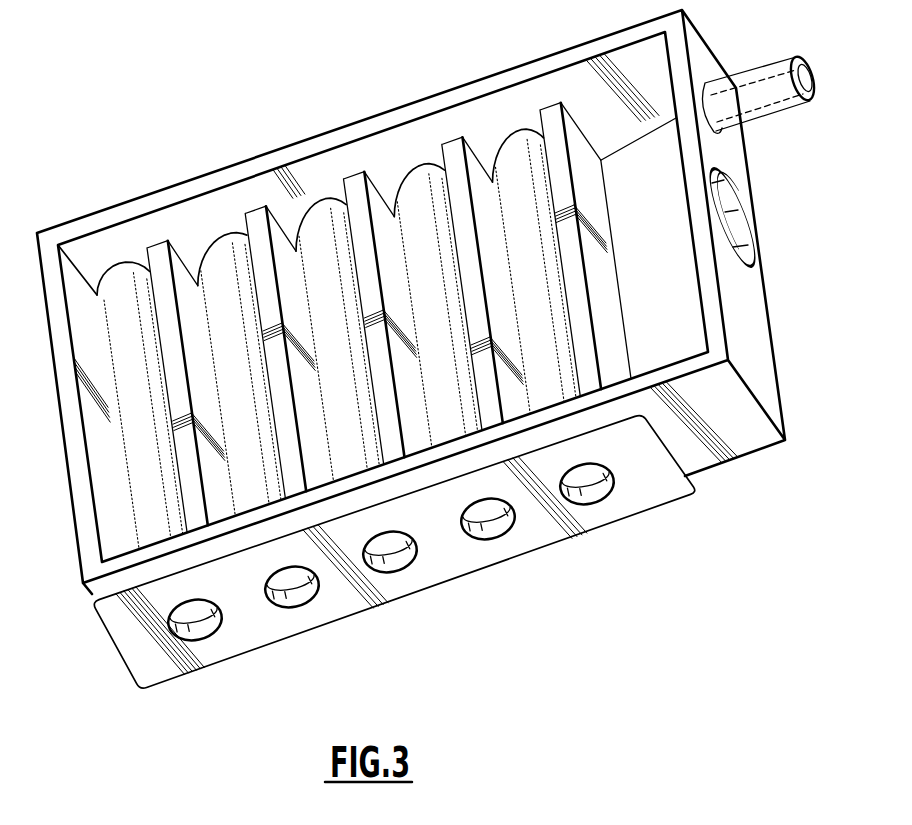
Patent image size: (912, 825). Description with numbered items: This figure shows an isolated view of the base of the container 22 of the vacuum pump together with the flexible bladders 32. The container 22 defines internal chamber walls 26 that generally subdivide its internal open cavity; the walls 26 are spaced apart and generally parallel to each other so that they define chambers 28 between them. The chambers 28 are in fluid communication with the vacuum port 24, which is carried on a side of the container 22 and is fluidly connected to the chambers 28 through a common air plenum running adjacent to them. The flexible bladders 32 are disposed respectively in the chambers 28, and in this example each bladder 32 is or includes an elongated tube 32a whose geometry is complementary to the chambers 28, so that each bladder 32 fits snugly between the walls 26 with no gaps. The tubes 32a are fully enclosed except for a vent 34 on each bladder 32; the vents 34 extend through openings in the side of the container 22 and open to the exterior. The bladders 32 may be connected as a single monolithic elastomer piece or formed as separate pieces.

The container 22 is at (740, 447).
The vacuum port 24 is at (768, 77).
The internal chamber walls 26 is at (613, 345).
The chambers 28 is at (485, 222).
The flexible bladders 32 is at (511, 160).
The elongated tube 32a is at (543, 297).
The vent 34 is at (193, 624).